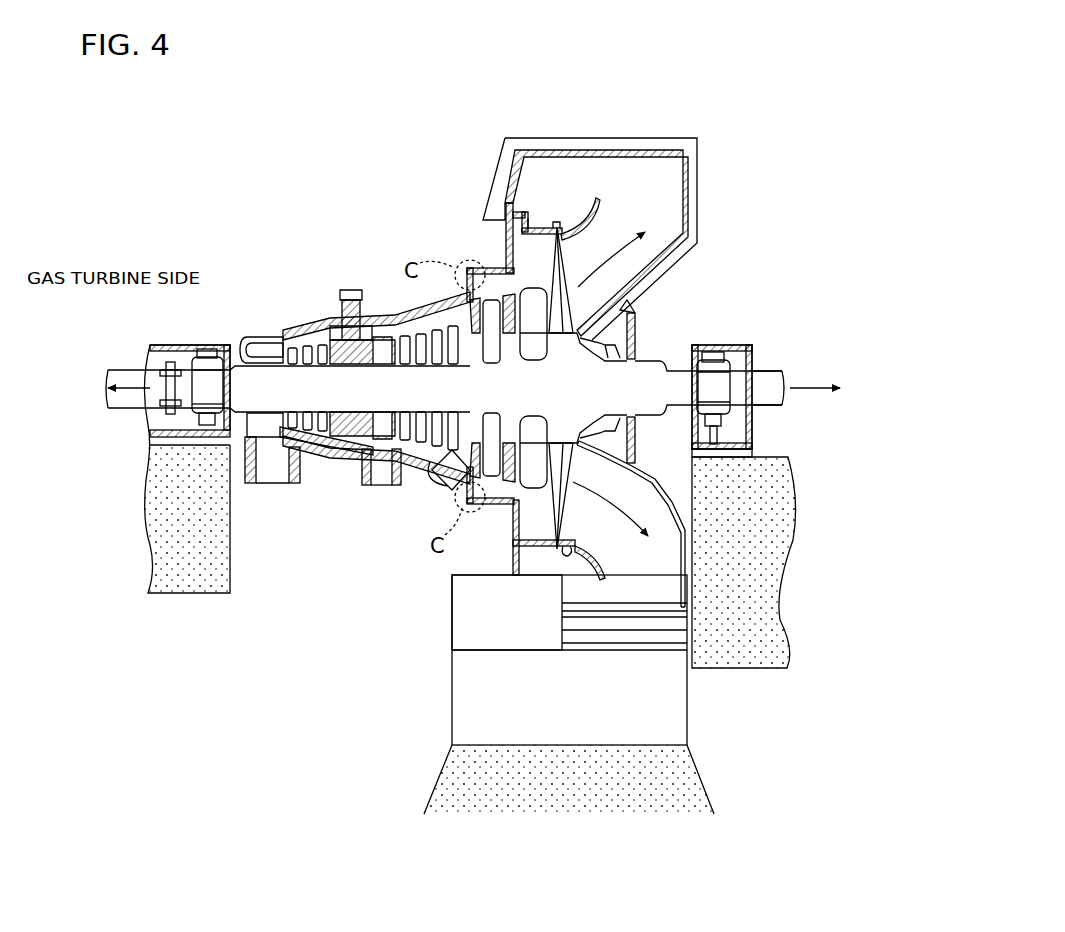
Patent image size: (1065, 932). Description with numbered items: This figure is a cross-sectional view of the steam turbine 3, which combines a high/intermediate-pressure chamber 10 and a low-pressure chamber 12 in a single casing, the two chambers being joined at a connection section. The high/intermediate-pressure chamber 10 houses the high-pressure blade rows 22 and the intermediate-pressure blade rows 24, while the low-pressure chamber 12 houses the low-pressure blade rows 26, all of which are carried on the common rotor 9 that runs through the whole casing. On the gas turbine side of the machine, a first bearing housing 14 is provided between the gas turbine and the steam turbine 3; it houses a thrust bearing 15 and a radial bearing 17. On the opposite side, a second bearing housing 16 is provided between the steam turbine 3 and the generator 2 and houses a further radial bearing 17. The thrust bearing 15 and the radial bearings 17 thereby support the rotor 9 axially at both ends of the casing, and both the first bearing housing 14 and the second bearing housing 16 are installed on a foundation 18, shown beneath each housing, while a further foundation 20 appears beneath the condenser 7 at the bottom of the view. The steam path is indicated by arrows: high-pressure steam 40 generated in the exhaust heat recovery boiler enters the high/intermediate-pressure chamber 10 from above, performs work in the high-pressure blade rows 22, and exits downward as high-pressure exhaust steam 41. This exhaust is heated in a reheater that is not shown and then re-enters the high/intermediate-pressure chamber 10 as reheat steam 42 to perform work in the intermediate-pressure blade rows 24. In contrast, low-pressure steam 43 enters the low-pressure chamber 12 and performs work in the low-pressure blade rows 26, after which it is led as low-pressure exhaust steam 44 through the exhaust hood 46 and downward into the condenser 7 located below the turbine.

The generator 2 is at (810, 380).
The steam turbine 3 is at (690, 105).
The condenser 7 is at (672, 704).
The rotor 9 is at (770, 376).
The high/intermediate-pressure chamber 10 is at (292, 340).
The low-pressure chamber 12 is at (505, 238).
The first bearing housing 14 is at (208, 346).
The thrust bearing 15 is at (172, 360).
The second bearing housing 16 is at (697, 348).
The radial bearing 17 is at (228, 346).
The foundation 18 is at (200, 585).
The exhaust foundation 20 is at (703, 775).
The high-pressure blade rows 22 is at (276, 340).
The intermediate-pressure blade rows 24 is at (418, 330).
The low-pressure blade rows 26 is at (522, 292).
The high-pressure steam 40 is at (350, 278).
The high-pressure exhaust steam 41 is at (278, 470).
The reheat steam 42 is at (388, 450).
The low-pressure steam 43 is at (428, 484).
The low-pressure exhaust steam 44 is at (608, 266).
The exhaust hood 46 is at (655, 188).